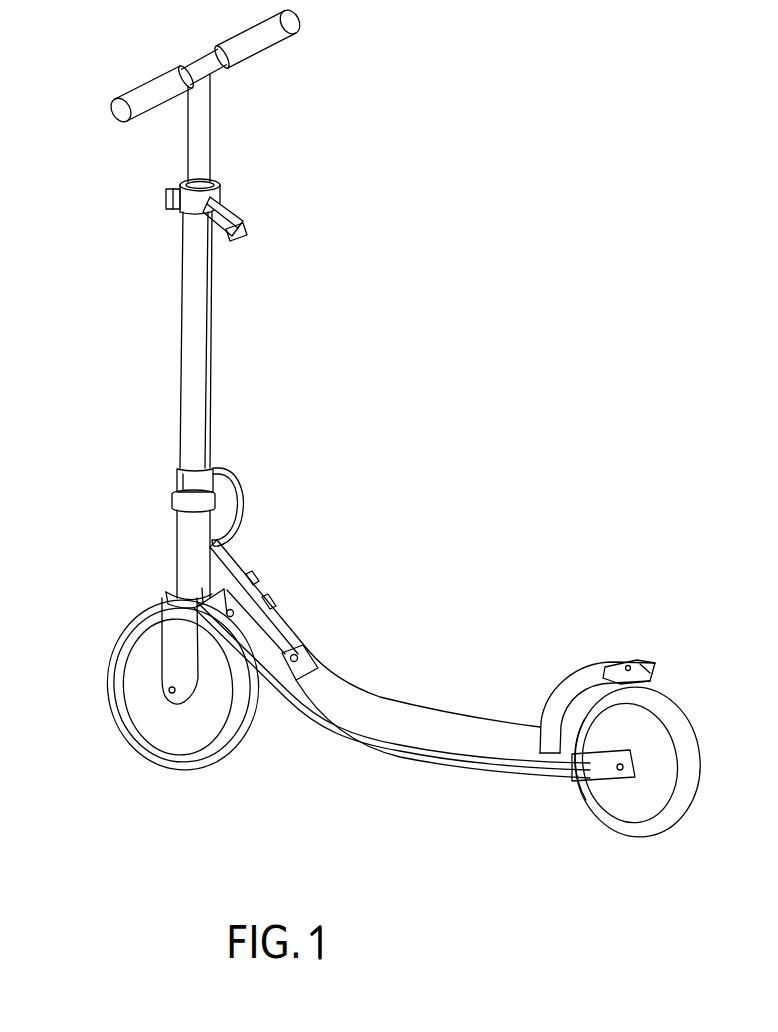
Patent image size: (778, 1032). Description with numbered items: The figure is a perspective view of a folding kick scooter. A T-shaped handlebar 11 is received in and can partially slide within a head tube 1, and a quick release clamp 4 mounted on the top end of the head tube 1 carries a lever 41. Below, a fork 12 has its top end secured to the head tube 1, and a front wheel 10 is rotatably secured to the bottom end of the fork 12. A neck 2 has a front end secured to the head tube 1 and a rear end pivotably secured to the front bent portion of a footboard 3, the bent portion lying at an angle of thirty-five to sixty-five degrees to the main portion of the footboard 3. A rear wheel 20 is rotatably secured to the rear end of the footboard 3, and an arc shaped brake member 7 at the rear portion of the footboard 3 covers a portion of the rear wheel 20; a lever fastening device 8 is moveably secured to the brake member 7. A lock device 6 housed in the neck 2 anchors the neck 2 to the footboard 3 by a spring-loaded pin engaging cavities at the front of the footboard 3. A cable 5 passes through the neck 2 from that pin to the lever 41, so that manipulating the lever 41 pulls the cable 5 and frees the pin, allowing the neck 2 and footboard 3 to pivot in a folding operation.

The head tube 1 is at (181, 385).
The neck 2 is at (237, 557).
The footboard 3 is at (380, 697).
The quick release clamp 4 is at (237, 215).
The lever 41 is at (238, 233).
The cable 5 is at (250, 490).
The lock device 6 is at (268, 587).
The brake member 7 is at (560, 688).
The lever fastening device 8 is at (638, 658).
The front wheel 10 is at (109, 652).
The T-shaped handlebar 11 is at (145, 91).
The fork 12 is at (172, 613).
The rear wheel 20 is at (617, 825).